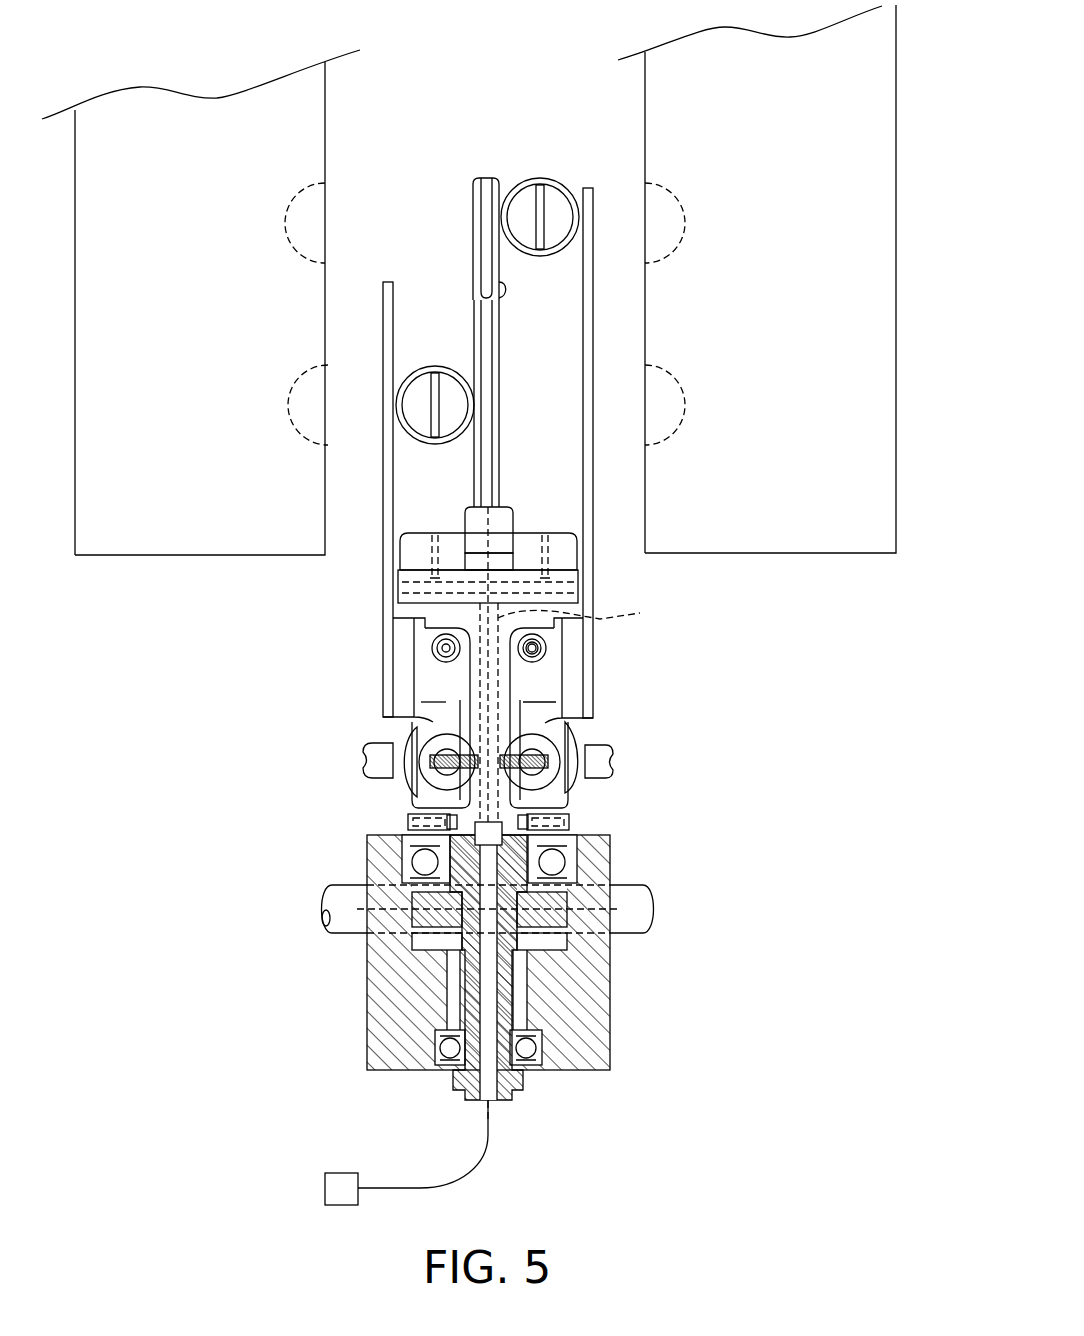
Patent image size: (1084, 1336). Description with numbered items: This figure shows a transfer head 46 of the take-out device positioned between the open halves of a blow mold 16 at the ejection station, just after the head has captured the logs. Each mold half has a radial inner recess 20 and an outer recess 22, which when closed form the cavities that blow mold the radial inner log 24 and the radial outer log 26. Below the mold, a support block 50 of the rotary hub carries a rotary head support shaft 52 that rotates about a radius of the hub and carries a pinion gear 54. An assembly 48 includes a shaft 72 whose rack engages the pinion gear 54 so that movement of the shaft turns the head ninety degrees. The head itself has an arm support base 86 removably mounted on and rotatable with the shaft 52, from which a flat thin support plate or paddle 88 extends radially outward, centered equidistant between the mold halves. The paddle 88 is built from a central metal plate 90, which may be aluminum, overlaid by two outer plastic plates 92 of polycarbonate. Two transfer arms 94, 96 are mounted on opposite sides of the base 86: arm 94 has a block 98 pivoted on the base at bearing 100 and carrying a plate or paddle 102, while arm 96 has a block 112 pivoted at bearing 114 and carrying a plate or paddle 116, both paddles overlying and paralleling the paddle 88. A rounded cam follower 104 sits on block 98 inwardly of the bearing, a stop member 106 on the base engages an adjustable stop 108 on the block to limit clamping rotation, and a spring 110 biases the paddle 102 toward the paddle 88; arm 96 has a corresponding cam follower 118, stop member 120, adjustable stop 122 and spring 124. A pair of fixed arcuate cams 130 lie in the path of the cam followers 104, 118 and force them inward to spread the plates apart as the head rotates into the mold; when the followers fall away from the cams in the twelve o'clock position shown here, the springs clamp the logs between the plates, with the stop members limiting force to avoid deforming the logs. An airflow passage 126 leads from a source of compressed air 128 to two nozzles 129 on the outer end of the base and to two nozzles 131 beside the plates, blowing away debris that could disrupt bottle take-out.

The blow mold 16 is at (75, 572).
The radial inner recess 20 is at (285, 242).
The outer recess 22 is at (287, 425).
The radial inner log 24 is at (543, 178).
The radial outer log 26 is at (440, 368).
The transfer head 46 is at (377, 651).
The assembly 48 is at (475, 974).
The support block 50 is at (610, 985).
The rotary head support shaft 52 is at (510, 1100).
The pinion gear 54 is at (537, 940).
The shaft 72 is at (628, 885).
The arm support base 86 is at (542, 636).
The support plate or paddle 88 is at (470, 180).
The central metal plate 90 is at (490, 372).
The outer plastic plate 92 is at (490, 297).
The transfer arm 94 is at (383, 594).
The transfer arm 96 is at (597, 592).
The block 98 is at (441, 718).
The bearing 100 is at (434, 641).
The plate or paddle 102 is at (383, 497).
The cam follower 104 is at (403, 742).
The stop member 106 is at (467, 788).
The adjustable stop 108 is at (408, 822).
The spring 110 is at (430, 757).
The block 112 is at (539, 718).
The bearing 114 is at (546, 652).
The plate or paddle 116 is at (582, 460).
The cam follower 118 is at (577, 748).
The stop member 120 is at (533, 803).
The adjustable stop 122 is at (570, 822).
The spring 124 is at (520, 733).
The airflow passage 126 is at (287, 958).
The source of compressed air 128 is at (340, 1173).
The nozzle 129 is at (432, 533).
The arcuate cam 130 is at (363, 760).
The nozzle 131 is at (383, 569).